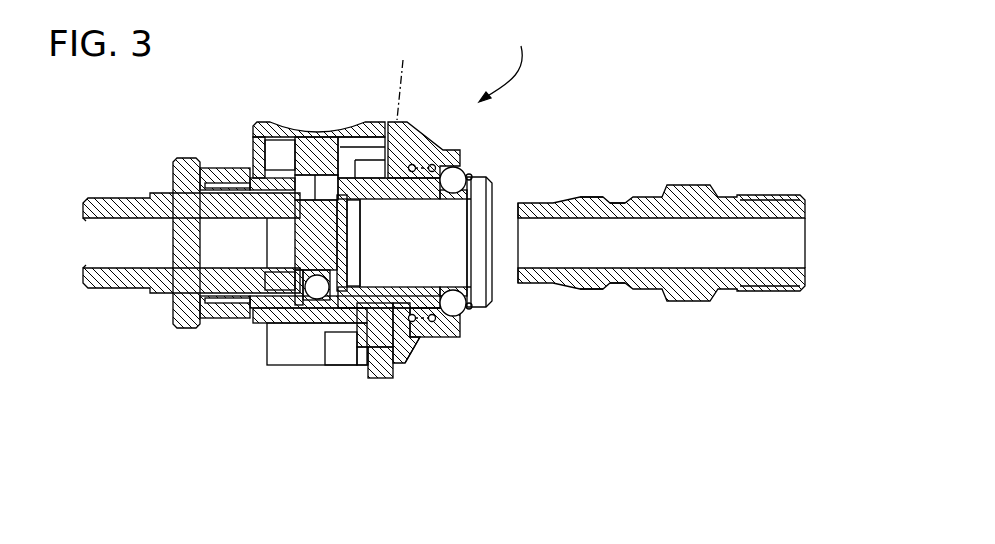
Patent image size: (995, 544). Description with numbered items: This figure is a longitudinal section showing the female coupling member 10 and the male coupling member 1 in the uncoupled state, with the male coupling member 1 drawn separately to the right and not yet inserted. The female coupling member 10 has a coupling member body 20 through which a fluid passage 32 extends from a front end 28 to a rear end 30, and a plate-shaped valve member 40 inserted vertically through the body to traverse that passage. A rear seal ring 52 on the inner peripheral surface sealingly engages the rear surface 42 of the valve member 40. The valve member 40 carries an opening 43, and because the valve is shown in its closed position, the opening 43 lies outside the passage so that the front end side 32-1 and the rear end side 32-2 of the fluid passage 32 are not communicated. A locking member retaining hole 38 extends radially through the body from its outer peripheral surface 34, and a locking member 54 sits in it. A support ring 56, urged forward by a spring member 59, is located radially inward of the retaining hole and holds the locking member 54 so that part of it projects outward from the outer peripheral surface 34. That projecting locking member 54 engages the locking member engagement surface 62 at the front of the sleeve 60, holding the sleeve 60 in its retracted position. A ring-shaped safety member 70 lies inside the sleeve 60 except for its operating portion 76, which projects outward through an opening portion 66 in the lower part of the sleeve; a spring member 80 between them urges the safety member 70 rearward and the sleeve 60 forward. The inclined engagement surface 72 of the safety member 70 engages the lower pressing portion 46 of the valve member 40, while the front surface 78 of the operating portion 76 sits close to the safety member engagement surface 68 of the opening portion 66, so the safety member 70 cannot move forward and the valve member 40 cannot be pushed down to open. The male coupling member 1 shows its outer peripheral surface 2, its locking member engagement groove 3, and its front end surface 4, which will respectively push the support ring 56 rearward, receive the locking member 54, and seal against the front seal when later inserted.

The male coupling member 1 is at (700, 185).
The outer peripheral surface 2 is at (567, 199).
The locking member engagement groove 3 is at (615, 202).
The front end surface 4 is at (517, 202).
The female coupling member 10 is at (508, 62).
The coupling member body 20 is at (213, 166).
The front end 28 is at (493, 280).
The rear end 30 is at (80, 255).
The fluid passage 32 is at (97, 237).
The front end side of the fluid passage 32-1 is at (490, 313).
The rear end side of the fluid passage 32-2 is at (125, 253).
The outer peripheral surface 34 is at (425, 148).
The locking member retaining hole 38 is at (440, 160).
The valve member 40 is at (262, 122).
The rear surface 42 is at (197, 188).
The opening 43 is at (302, 183).
The lower pressing portion 46 is at (313, 323).
The rear seal ring 52 is at (265, 300).
The locking member 54 is at (458, 170).
The support ring 56 is at (490, 178).
The spring member 59 is at (403, 77).
The sleeve 60 is at (418, 335).
The locking member engagement surface 62 is at (460, 312).
The opening portion 66 is at (360, 368).
The safety member engagement surface 68 is at (405, 370).
The safety member 70 is at (375, 350).
The inclined engagement surface 72 is at (338, 358).
The operating portion 76 is at (378, 380).
The front surface 78 is at (393, 368).
The spring member 80 is at (420, 338).